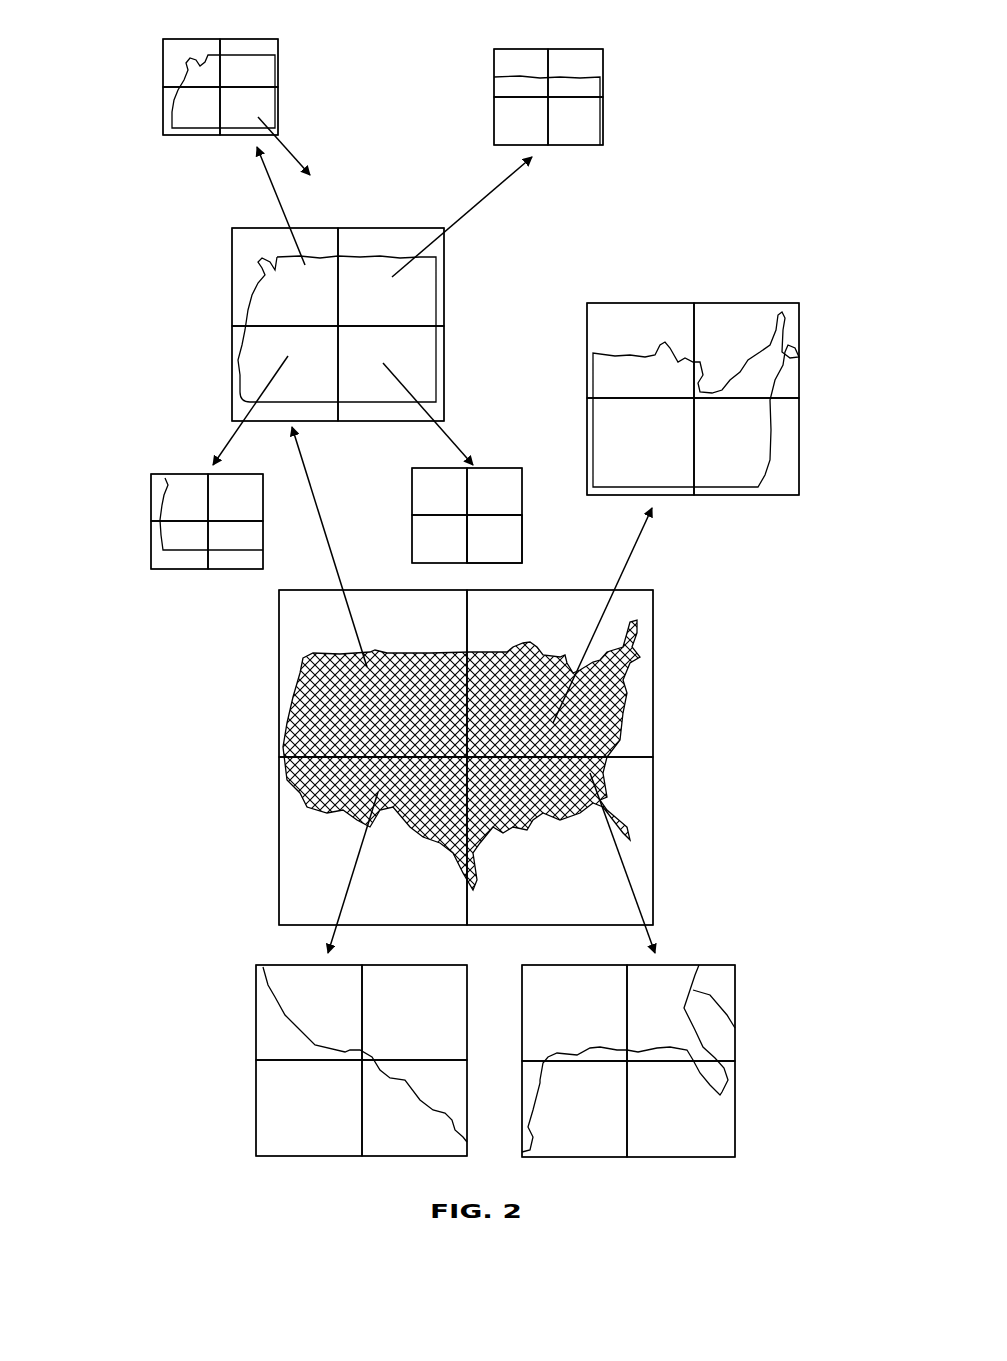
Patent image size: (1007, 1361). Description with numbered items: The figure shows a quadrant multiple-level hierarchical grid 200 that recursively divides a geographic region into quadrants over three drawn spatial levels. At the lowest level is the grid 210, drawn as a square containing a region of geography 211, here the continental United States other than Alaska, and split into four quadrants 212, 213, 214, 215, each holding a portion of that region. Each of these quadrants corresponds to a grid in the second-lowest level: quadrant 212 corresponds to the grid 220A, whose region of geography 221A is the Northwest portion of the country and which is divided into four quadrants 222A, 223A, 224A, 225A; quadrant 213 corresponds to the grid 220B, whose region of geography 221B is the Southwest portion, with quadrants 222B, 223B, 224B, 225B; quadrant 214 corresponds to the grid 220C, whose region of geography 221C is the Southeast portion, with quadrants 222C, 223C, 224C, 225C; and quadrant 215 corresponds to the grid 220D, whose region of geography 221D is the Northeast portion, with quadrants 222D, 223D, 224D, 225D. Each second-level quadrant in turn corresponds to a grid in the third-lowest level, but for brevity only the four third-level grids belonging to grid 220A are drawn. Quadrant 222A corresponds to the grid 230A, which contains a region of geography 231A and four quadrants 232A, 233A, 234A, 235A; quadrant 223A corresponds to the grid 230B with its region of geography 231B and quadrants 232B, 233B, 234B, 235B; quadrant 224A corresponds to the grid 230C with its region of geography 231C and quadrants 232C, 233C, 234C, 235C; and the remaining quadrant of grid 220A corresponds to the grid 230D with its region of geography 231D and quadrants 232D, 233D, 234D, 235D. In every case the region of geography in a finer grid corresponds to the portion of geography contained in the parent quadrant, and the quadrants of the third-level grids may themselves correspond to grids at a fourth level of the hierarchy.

The quadrant multiple-level hierarchical grid 200 is at (453, 596).
The lowest-level grid 210 is at (655, 612).
The region of geography 211 is at (630, 705).
The quadrant 212 is at (288, 640).
The quadrant 213 is at (283, 868).
The quadrant 214 is at (650, 865).
The quadrant 215 is at (650, 675).
The second-lowest level grid 220A is at (445, 293).
The region of geography 221A is at (440, 315).
The quadrant 222A is at (240, 292).
The quadrant 223A is at (243, 408).
The quadrant 224A is at (436, 410).
The quadrant 225A is at (445, 238).
The second-lowest level grid 220B is at (258, 975).
The region of geography 221B is at (268, 1000).
The quadrant 222B is at (268, 1027).
The quadrant 223B is at (272, 1100).
The quadrant 224B is at (392, 1137).
The quadrant 225B is at (380, 985).
The second-lowest level grid 220C is at (735, 985).
The region of geography 221C is at (728, 1025).
The quadrant 222C is at (575, 980).
The quadrant 223C is at (572, 1140).
The quadrant 224C is at (718, 1110).
The quadrant 225C is at (725, 1045).
The second-lowest level grid 220D is at (664, 300).
The region of geography 221D is at (792, 338).
The quadrant 222D is at (628, 320).
The quadrant 223D is at (670, 468).
The quadrant 224D is at (785, 485).
The quadrant 225D is at (733, 320).
The third-lowest level grid 230A is at (196, 40).
The region of geography 231A is at (278, 95).
The quadrant 232A is at (183, 70).
The quadrant 233A is at (183, 113).
The quadrant 234A is at (232, 128).
The quadrant 235A is at (268, 67).
The third-lowest level grid 230B is at (160, 475).
The region of geography 231B is at (160, 485).
The quadrant 232B is at (153, 512).
The quadrant 233B is at (158, 555).
The quadrant 234B is at (255, 560).
The quadrant 235B is at (255, 485).
The third-lowest level grid 230C is at (458, 468).
The region of geography 231C is at (515, 525).
The quadrant 232C is at (418, 483).
The quadrant 233C is at (418, 556).
The quadrant 234C is at (515, 558).
The quadrant 235C is at (510, 490).
The third-lowest level grid 230D is at (562, 45).
The region of geography 231D is at (600, 117).
The quadrant 232D is at (508, 55).
The quadrant 233D is at (540, 137).
The quadrant 234D is at (588, 137).
The quadrant 235D is at (595, 62).